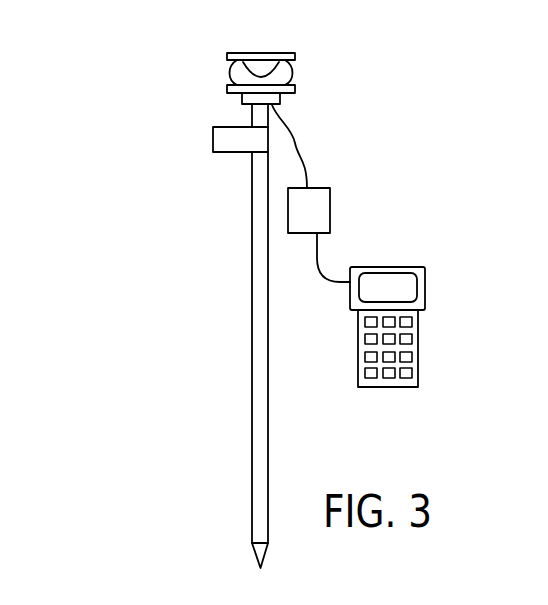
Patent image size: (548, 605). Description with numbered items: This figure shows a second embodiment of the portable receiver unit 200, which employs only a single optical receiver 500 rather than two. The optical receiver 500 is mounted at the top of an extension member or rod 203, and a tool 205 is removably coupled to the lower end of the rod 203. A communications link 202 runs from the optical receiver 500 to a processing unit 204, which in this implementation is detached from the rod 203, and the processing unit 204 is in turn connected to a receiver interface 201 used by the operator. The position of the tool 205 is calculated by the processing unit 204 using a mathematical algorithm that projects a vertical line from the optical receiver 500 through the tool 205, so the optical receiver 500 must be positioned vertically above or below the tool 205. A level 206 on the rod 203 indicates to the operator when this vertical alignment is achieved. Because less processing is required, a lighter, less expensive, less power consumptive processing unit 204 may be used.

The portable receiver unit 200 is at (168, 300).
The receiver interface 201 is at (418, 327).
The communications link 202 is at (295, 140).
The rod 203 is at (252, 242).
The processing unit 204 is at (330, 208).
The tool 205 is at (255, 552).
The level 206 is at (213, 137).
The optical receiver 500 is at (295, 58).